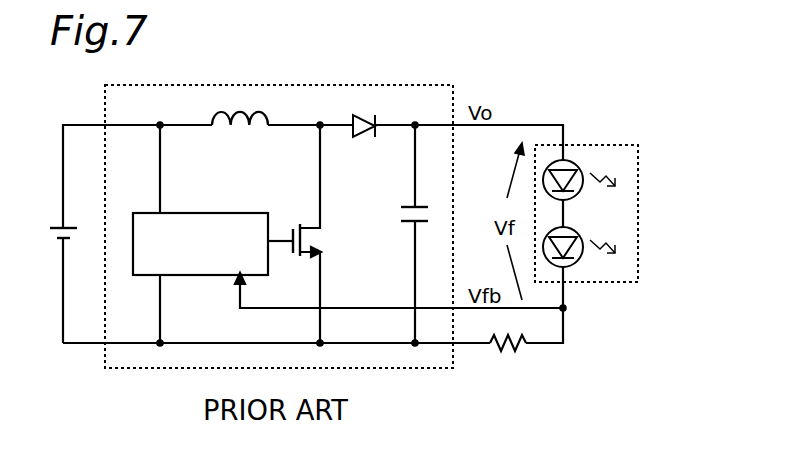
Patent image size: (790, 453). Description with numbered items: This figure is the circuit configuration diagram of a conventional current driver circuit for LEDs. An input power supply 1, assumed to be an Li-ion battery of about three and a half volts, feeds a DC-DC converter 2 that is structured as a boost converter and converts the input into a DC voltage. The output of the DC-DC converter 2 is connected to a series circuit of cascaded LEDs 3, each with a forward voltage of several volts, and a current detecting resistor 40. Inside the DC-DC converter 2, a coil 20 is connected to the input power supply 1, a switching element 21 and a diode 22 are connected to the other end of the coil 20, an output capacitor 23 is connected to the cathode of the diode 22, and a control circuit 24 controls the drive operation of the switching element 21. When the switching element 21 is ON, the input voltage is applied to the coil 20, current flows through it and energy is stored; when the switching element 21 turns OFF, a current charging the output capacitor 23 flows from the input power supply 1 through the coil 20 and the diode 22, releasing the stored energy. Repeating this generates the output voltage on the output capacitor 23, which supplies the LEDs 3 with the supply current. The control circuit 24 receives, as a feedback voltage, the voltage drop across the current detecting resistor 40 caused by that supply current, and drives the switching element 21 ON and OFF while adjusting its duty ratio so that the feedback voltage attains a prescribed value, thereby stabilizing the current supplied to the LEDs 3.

The input power supply 1 is at (52, 224).
The DC-DC converter 2 is at (100, 358).
The LEDs 3 is at (600, 145).
The coil 20 is at (237, 133).
The switching element 21 is at (300, 226).
The diode 22 is at (352, 140).
The output capacitor 23 is at (398, 218).
The control circuit 24 is at (178, 278).
The current detecting resistor 40 is at (518, 350).